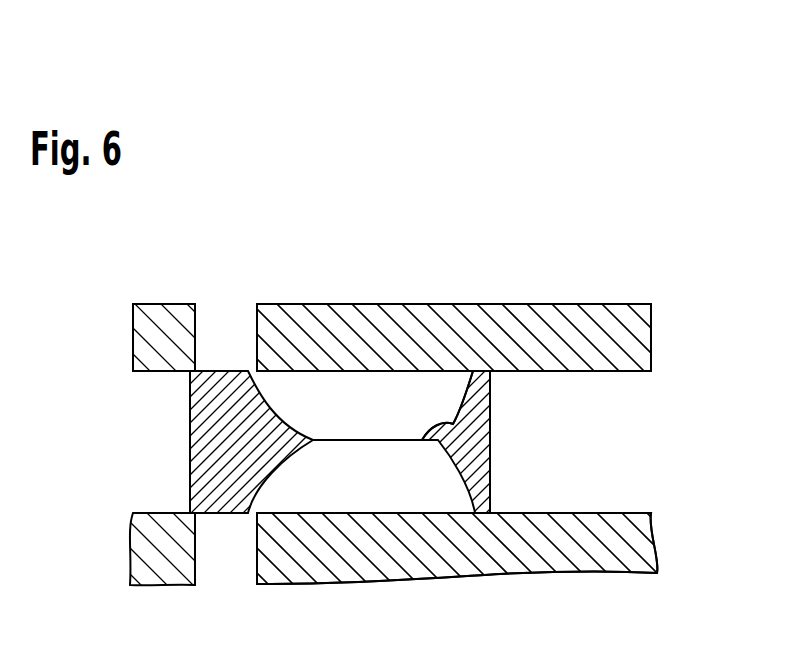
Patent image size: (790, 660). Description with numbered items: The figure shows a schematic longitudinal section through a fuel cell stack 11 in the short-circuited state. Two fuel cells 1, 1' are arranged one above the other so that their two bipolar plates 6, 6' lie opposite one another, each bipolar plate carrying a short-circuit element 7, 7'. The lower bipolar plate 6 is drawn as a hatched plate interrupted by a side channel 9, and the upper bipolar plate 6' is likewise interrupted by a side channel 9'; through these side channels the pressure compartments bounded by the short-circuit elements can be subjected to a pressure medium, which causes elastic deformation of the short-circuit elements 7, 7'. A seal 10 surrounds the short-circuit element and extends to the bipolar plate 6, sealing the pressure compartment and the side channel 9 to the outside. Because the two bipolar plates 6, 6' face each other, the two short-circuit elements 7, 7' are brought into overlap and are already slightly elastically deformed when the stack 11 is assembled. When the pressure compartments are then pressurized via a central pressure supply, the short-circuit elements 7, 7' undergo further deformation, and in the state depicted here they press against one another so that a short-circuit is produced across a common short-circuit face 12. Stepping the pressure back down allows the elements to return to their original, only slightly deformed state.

The fuel cell 1 is at (354, 379).
The fuel cell 1' is at (344, 330).
The bipolar plate 6 is at (458, 379).
The bipolar plate 6' is at (454, 330).
The short-circuit element 7 is at (486, 440).
The short-circuit element 7' is at (505, 397).
The side channel 9 is at (226, 581).
The side channel 9' is at (226, 304).
The seal 10 is at (210, 449).
The fuel cell stack 11 is at (660, 435).
The common short-circuit face 12 is at (456, 425).